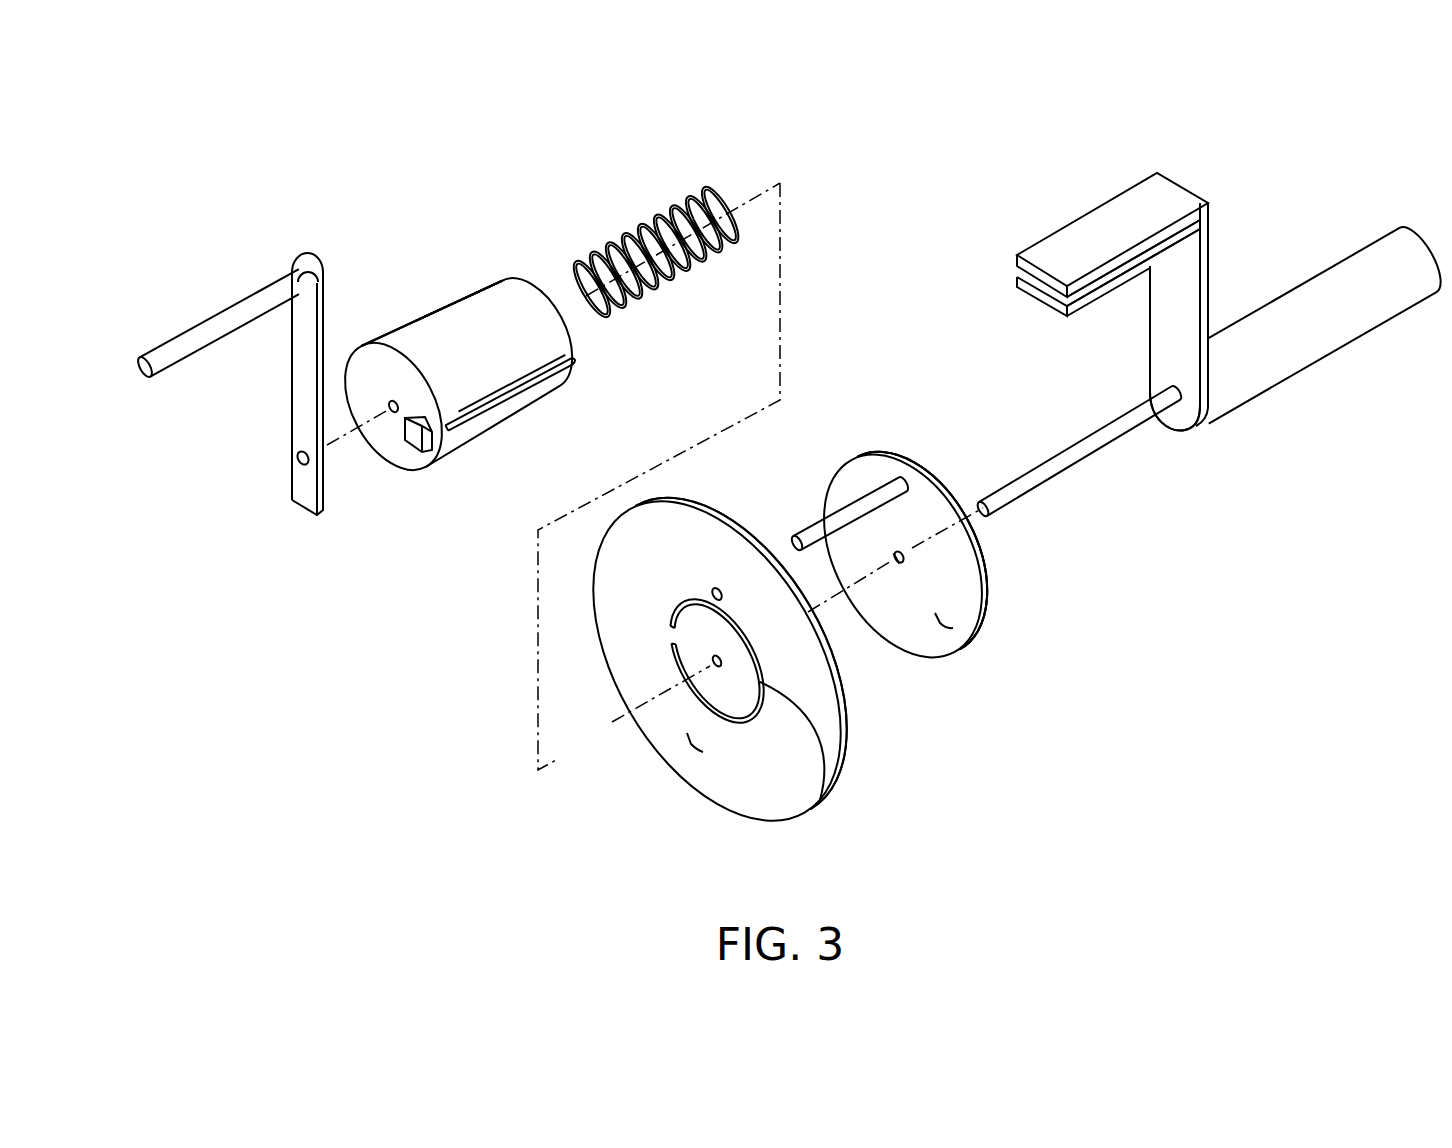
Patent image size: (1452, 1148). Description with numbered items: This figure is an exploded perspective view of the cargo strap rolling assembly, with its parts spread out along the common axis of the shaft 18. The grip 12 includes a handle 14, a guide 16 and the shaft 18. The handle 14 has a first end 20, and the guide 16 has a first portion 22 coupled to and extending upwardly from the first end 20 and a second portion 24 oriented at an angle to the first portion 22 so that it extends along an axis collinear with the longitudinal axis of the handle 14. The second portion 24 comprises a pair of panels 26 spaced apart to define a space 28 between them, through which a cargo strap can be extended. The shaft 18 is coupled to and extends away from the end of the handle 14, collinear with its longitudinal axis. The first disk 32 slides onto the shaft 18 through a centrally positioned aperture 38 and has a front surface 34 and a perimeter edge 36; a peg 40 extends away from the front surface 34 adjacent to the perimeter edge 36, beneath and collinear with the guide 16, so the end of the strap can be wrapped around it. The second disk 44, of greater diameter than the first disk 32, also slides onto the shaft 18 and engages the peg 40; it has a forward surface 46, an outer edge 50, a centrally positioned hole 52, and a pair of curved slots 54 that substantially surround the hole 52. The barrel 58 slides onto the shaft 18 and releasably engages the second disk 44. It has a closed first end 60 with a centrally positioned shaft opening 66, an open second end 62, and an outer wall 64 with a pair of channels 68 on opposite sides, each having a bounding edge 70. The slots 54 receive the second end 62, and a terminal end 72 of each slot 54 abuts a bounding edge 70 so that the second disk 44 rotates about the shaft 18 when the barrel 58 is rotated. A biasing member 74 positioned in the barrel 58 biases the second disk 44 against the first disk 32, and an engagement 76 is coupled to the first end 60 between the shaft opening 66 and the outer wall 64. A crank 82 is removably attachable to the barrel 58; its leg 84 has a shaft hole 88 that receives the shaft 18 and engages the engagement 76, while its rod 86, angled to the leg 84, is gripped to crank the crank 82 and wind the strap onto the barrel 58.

The grip 12 is at (1240, 187).
The handle 14 is at (1345, 258).
The guide 16 is at (1177, 173).
The shaft 18 is at (1078, 468).
The first end 20 is at (1188, 424).
The first portion 22 is at (1214, 367).
The second portion 24 is at (1092, 206).
The panels 26 is at (1033, 246).
The space 28 is at (1102, 284).
The first disk 32 is at (988, 620).
The front surface 34 is at (918, 655).
The perimeter edge 36 is at (887, 457).
The aperture 38 is at (893, 574).
The peg 40 is at (812, 532).
The second disk 44 is at (727, 790).
The forward surface 46 is at (690, 746).
The outer edge 50 is at (718, 522).
The hole 52 is at (711, 666).
The slots 54 is at (668, 612).
The barrel 58 is at (447, 304).
The first end 60 is at (378, 455).
The second end 62 is at (533, 263).
The outer wall 64 is at (487, 302).
The shaft opening 66 is at (384, 400).
The channels 68 is at (522, 390).
The bounding edge 70 is at (462, 425).
The terminal end 72 is at (826, 790).
The biasing member 74 is at (679, 203).
The engagement 76 is at (416, 452).
The crank 82 is at (318, 250).
The leg 84 is at (293, 367).
The rod 86 is at (238, 298).
The shaft hole 88 is at (290, 476).